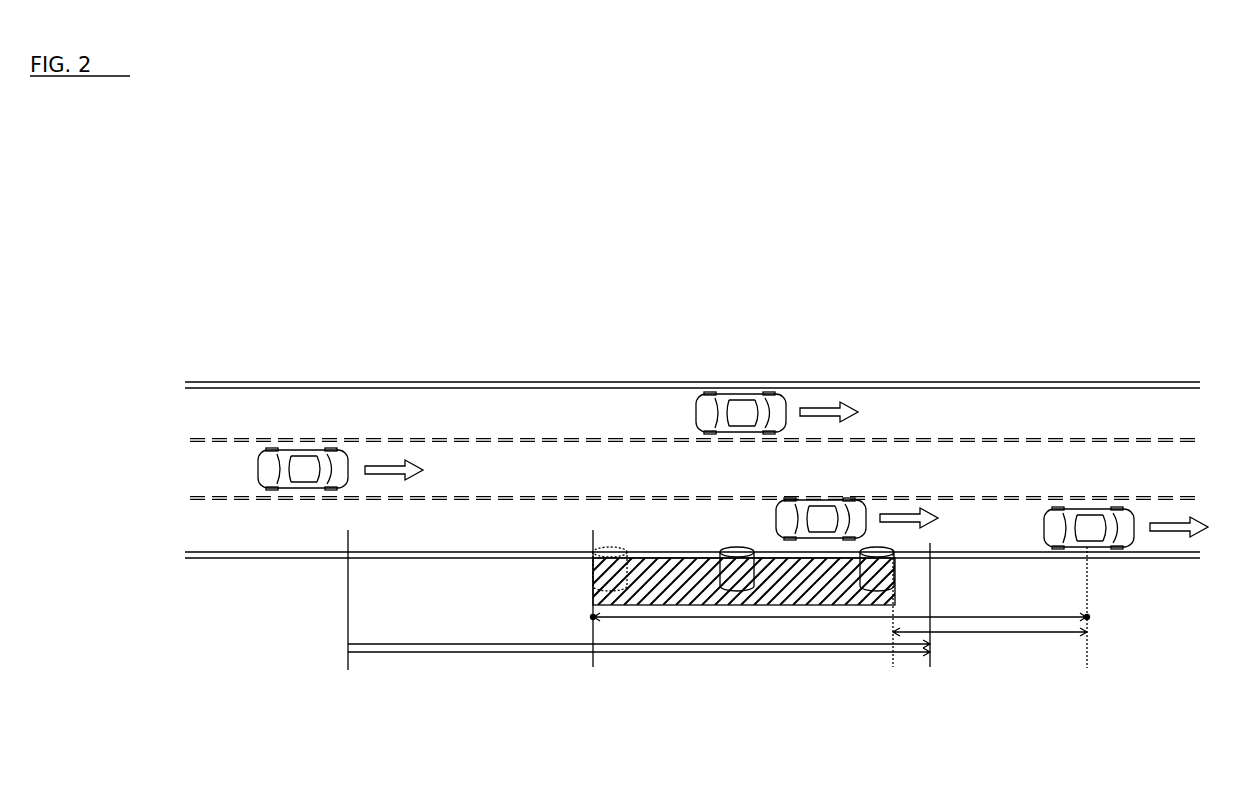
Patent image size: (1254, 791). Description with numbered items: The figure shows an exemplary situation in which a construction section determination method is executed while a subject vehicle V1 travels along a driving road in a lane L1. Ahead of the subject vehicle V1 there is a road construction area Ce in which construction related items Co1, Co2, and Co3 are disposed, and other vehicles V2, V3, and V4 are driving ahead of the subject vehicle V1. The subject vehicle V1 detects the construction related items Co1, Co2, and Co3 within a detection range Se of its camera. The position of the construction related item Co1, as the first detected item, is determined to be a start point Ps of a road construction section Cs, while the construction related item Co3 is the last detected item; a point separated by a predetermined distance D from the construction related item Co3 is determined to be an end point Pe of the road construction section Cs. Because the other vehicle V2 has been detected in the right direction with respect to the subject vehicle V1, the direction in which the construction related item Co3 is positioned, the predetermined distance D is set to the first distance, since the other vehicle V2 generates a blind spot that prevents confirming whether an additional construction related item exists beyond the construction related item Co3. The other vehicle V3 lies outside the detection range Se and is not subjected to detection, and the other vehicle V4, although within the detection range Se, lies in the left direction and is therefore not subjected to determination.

The subject vehicle V1 is at (295, 448).
The other vehicle V2 is at (820, 540).
The other vehicle V3 is at (1125, 548).
The other vehicle V4 is at (755, 393).
The first lane L1 is at (232, 458).
The road construction area Ce is at (690, 605).
The construction related item Co1 is at (612, 590).
The construction related item Co2 is at (737, 590).
The construction related item Co3 is at (877, 590).
The start point Ps is at (593, 618).
The end point Pe is at (1090, 618).
The road construction section Cs is at (1015, 618).
The predetermined distance D is at (975, 633).
The detection range Se is at (428, 653).